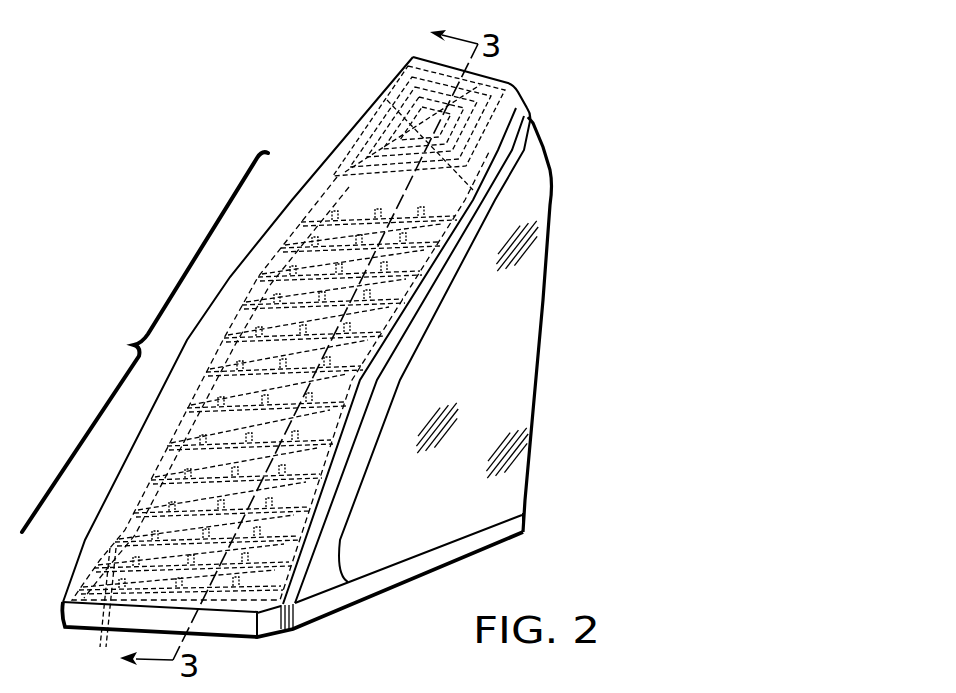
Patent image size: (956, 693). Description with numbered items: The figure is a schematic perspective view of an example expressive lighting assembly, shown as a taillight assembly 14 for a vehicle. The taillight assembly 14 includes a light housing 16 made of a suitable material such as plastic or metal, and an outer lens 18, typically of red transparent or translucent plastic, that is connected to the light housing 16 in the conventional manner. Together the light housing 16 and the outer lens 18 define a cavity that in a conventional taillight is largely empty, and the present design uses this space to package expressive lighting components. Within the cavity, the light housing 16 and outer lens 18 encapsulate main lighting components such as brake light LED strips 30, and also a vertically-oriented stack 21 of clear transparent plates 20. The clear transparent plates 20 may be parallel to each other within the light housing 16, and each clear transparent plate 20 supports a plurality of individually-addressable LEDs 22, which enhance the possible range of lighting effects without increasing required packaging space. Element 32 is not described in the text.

The taillight assembly 14 is at (620, 96).
The light housing 16 is at (500, 353).
The outer lens 18 is at (330, 177).
The clear transparent plate 20 is at (101, 609).
The vertically-oriented stack 21 is at (145, 342).
The individually-addressable LEDs 22 is at (170, 467).
The brake light LED strips 30 is at (387, 100).
The outer conductive trace 32 is at (487, 75).